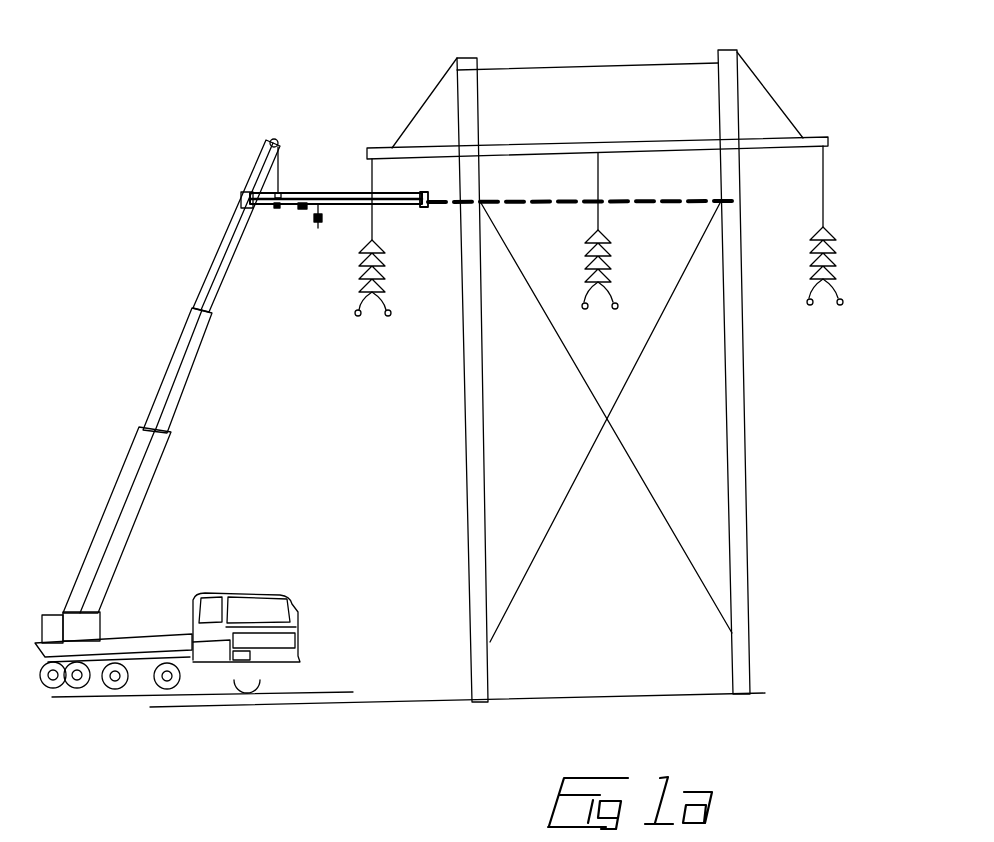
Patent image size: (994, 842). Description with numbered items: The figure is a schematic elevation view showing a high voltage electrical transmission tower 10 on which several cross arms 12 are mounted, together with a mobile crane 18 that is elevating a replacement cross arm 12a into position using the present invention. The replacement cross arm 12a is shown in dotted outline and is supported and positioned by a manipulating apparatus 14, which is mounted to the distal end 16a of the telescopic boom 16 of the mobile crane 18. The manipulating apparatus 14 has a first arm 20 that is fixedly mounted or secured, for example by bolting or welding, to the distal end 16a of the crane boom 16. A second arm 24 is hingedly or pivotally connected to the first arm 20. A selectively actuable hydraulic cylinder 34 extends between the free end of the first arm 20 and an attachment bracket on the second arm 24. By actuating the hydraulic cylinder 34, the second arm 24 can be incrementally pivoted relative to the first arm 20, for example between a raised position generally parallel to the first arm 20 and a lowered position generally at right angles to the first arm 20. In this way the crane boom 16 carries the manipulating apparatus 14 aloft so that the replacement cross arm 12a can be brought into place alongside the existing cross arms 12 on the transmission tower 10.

The high voltage electrical transmission tower 10 is at (409, 75).
The cross arms 12 is at (498, 150).
The replacement cross arm 12a is at (637, 200).
The manipulating apparatus 14 is at (320, 228).
The telescopic boom 16 is at (138, 447).
The distal end 16a is at (238, 216).
The mobile crane 18 is at (240, 573).
The first arm 20 is at (262, 158).
The second arm 24 is at (317, 193).
The hydraulic cylinder 34 is at (280, 158).